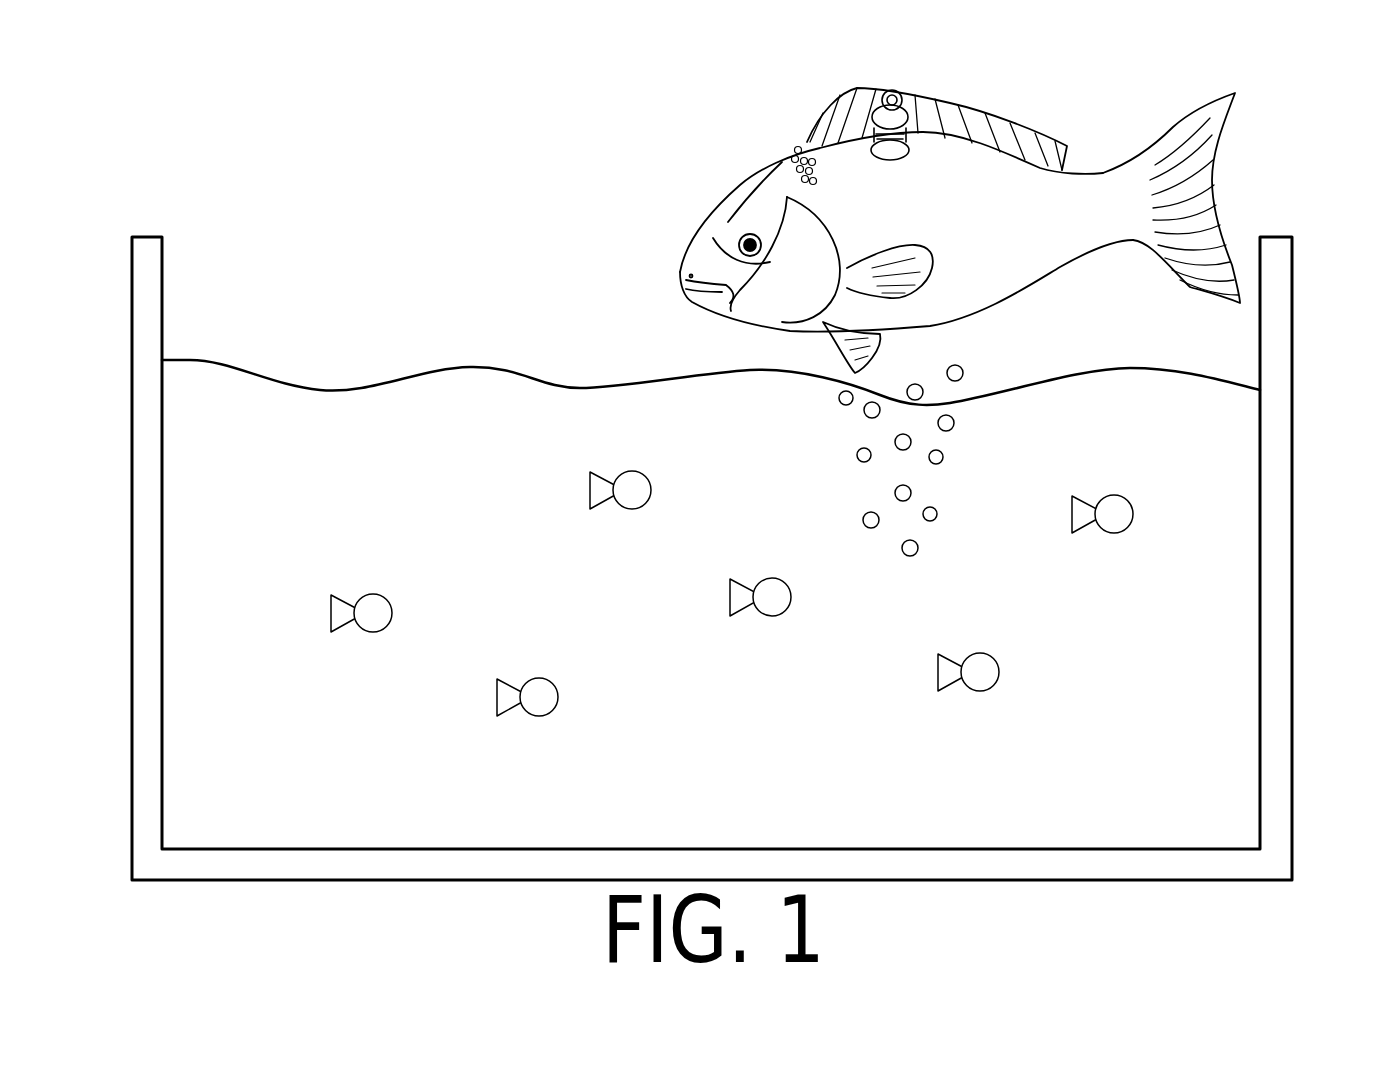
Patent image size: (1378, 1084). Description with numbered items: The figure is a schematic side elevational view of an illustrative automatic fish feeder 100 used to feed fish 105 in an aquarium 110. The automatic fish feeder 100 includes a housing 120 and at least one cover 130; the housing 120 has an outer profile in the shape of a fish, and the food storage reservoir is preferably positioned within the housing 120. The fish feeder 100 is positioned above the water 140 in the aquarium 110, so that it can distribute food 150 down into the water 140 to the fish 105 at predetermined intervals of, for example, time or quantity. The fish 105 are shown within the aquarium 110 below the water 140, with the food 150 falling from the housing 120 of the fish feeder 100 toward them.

The automatic fish feeder 100 is at (703, 172).
The fish 105 is at (358, 627).
The aquarium 110 is at (132, 238).
The housing 120 is at (1207, 110).
The cover 130 is at (906, 104).
The water 140 is at (433, 373).
The food 150 is at (953, 423).